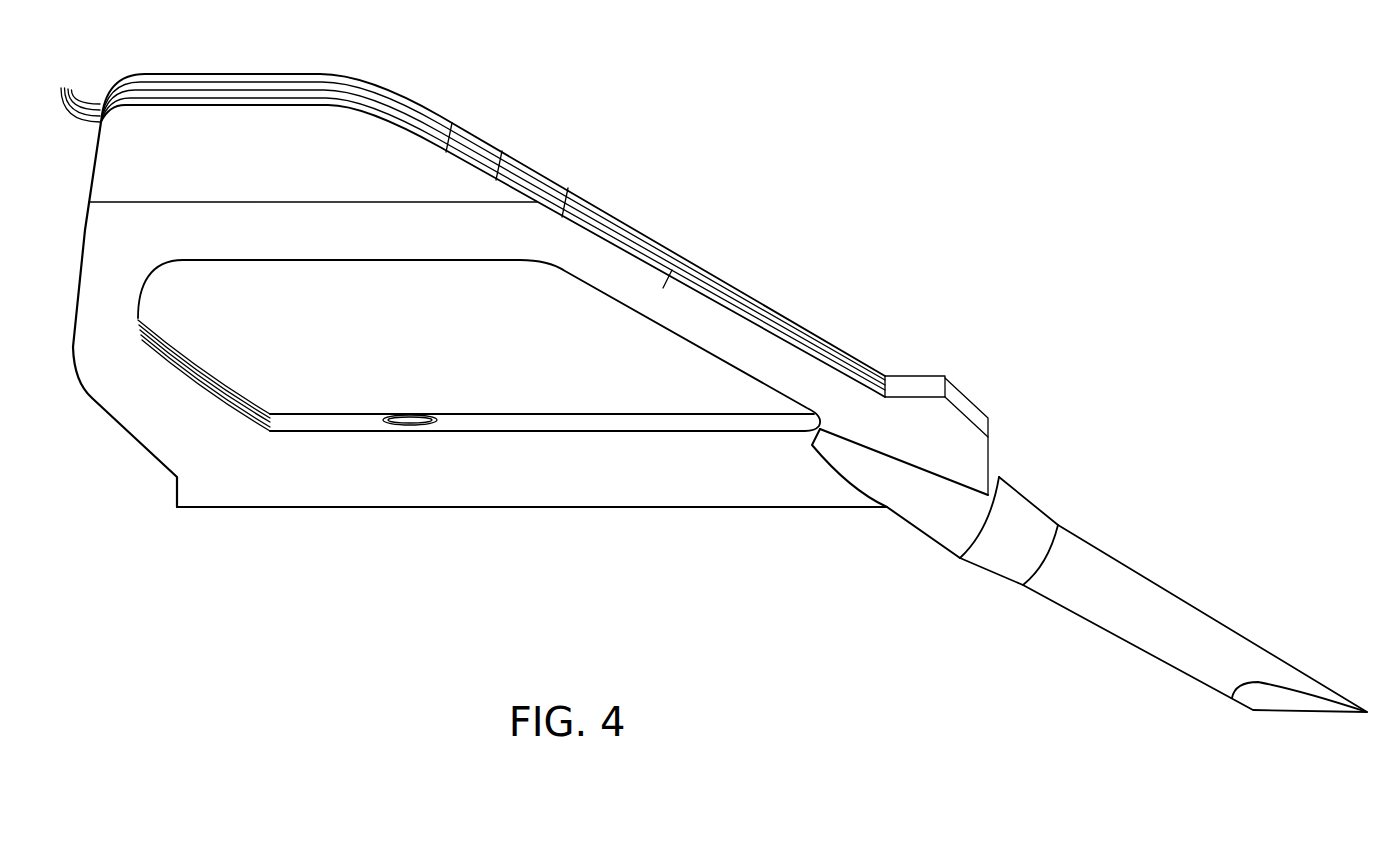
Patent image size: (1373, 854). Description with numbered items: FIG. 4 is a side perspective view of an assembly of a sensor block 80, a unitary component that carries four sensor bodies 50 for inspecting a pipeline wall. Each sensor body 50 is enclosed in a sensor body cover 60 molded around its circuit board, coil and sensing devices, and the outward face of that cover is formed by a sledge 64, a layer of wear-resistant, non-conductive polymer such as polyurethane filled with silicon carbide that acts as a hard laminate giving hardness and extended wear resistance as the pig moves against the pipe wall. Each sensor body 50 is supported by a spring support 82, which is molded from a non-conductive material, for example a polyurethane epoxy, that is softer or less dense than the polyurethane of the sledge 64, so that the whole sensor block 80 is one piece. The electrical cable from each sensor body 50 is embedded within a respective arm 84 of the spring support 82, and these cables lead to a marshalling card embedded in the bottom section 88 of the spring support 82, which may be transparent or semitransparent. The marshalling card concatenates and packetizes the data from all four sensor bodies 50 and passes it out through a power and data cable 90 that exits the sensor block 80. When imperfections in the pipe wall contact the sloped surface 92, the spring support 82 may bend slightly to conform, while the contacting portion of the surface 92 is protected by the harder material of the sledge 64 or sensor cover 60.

The sensor body 50 is at (75, 87).
The sensor body cover 60 is at (286, 172).
The sledge 64 is at (459, 131).
The sensor block 80 is at (722, 90).
The spring support 82 is at (637, 225).
The arm 84 is at (234, 410).
The bottom section 88 is at (578, 482).
The power and data cable 90 is at (1133, 593).
The sloped surface 92 is at (506, 161).